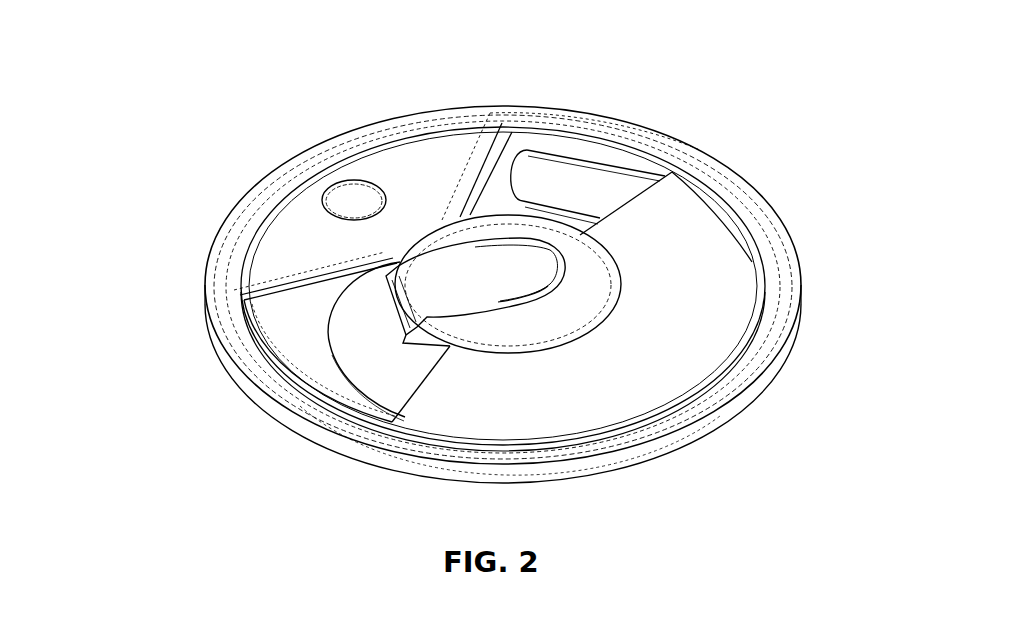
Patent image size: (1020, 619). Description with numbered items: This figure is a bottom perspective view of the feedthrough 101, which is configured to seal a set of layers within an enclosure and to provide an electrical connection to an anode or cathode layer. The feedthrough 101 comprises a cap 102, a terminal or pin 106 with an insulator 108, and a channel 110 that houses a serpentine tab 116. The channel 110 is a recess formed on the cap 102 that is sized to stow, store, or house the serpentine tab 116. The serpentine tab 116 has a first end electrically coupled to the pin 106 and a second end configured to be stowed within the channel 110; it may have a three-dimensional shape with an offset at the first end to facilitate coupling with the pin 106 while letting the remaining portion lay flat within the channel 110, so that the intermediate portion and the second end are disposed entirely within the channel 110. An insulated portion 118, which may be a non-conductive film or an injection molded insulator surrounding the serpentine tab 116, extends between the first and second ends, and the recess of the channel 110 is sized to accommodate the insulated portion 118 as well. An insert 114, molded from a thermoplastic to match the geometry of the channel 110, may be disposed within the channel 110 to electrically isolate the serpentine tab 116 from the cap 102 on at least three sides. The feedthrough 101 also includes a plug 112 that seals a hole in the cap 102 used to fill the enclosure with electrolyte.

The feedthrough 101 is at (96, 60).
The cap 102 is at (216, 222).
The pin 106 is at (527, 292).
The insulator 108 is at (552, 288).
The channel 110 is at (478, 137).
The plug 112 is at (350, 190).
The insert 114 is at (286, 324).
The serpentine tab 116 is at (567, 172).
The insulated portion 118 is at (680, 272).